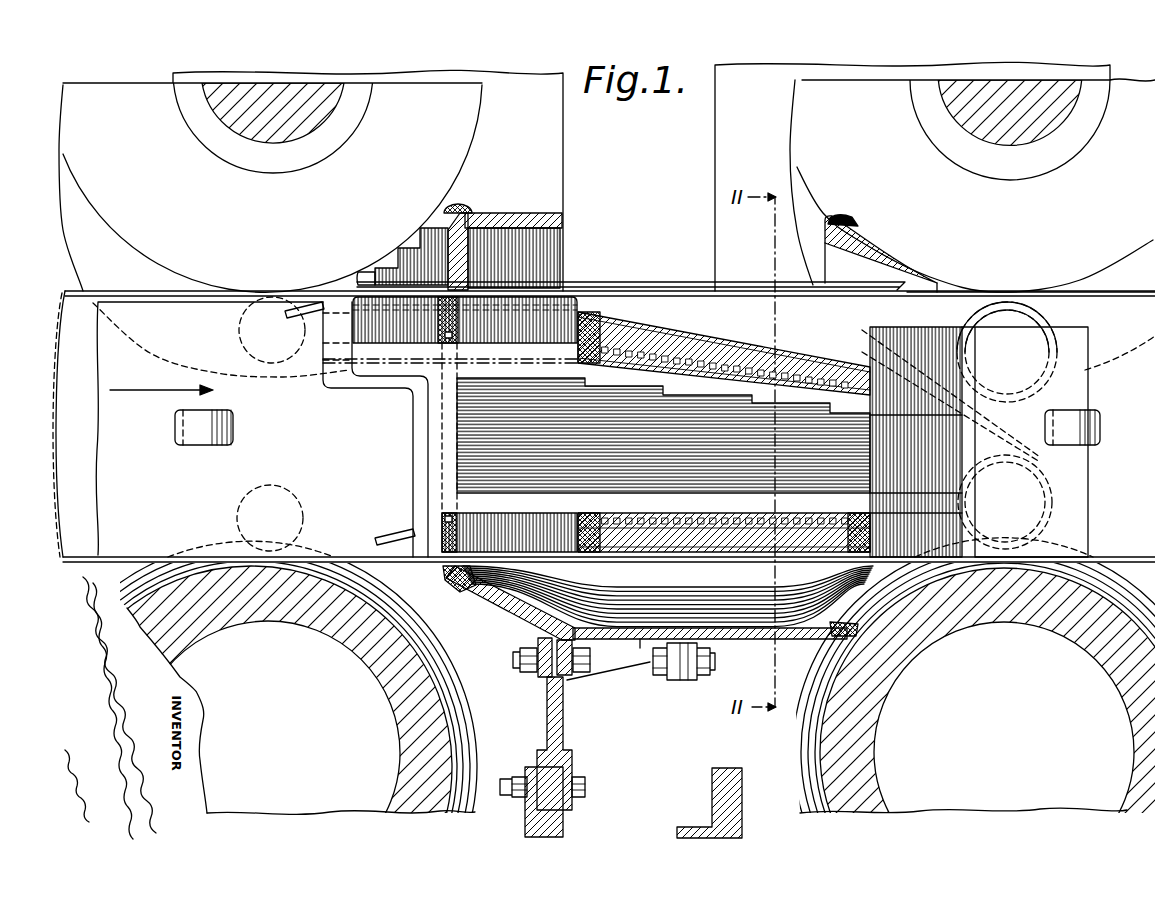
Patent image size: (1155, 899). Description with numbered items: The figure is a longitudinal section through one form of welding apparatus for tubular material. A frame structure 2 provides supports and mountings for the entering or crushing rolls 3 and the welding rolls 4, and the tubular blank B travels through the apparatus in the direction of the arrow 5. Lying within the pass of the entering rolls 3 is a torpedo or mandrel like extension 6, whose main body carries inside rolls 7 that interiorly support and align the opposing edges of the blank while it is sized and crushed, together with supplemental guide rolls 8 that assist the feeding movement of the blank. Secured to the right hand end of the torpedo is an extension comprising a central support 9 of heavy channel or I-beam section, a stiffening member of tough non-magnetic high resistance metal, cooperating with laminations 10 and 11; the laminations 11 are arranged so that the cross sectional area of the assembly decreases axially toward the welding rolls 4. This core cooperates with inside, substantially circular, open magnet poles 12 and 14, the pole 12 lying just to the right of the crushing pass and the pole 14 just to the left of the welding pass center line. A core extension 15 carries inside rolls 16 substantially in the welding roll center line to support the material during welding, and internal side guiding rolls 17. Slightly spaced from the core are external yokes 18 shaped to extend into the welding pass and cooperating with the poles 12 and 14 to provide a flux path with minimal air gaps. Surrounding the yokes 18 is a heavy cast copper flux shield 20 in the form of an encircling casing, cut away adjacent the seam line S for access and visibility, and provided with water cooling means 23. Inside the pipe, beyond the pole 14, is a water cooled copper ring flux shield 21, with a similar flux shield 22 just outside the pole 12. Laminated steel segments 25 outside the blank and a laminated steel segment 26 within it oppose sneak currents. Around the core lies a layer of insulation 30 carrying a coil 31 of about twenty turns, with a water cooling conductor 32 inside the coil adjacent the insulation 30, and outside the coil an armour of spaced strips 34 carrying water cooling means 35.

The frame structure 2 is at (565, 815).
The entering or crushing rolls 3 is at (473, 120).
The welding rolls 4 is at (810, 120).
The arrow 5 is at (161, 404).
The torpedo or mandrel like extension 6 is at (113, 497).
The inside rolls 7 is at (240, 330).
The supplemental guide rolls 8 is at (210, 427).
The central support 9 is at (615, 640).
The laminations 10 is at (670, 455).
The laminations 11 is at (748, 334).
The magnet pole 12 is at (512, 568).
The magnet pole 14 is at (917, 332).
The core extension 15 is at (1075, 473).
The inside rolls 16 is at (1045, 316).
The internal side guiding rolls 17 is at (1092, 430).
The external yokes 18 is at (715, 660).
The flux shield 20 is at (640, 640).
The flux shield 21 is at (967, 488).
The flux shield 22 is at (430, 532).
The water cooling means 23 is at (462, 207).
The laminated steel segments 25 is at (527, 253).
The laminated steel segment 26 is at (458, 300).
The layer of insulation 30 is at (716, 520).
The coil 31 is at (620, 300).
The water cooling conductor 32 is at (790, 356).
The spaced strips 34 is at (735, 565).
The water cooling means 35 is at (612, 650).
The blank B is at (160, 563).
The seam line S is at (962, 290).